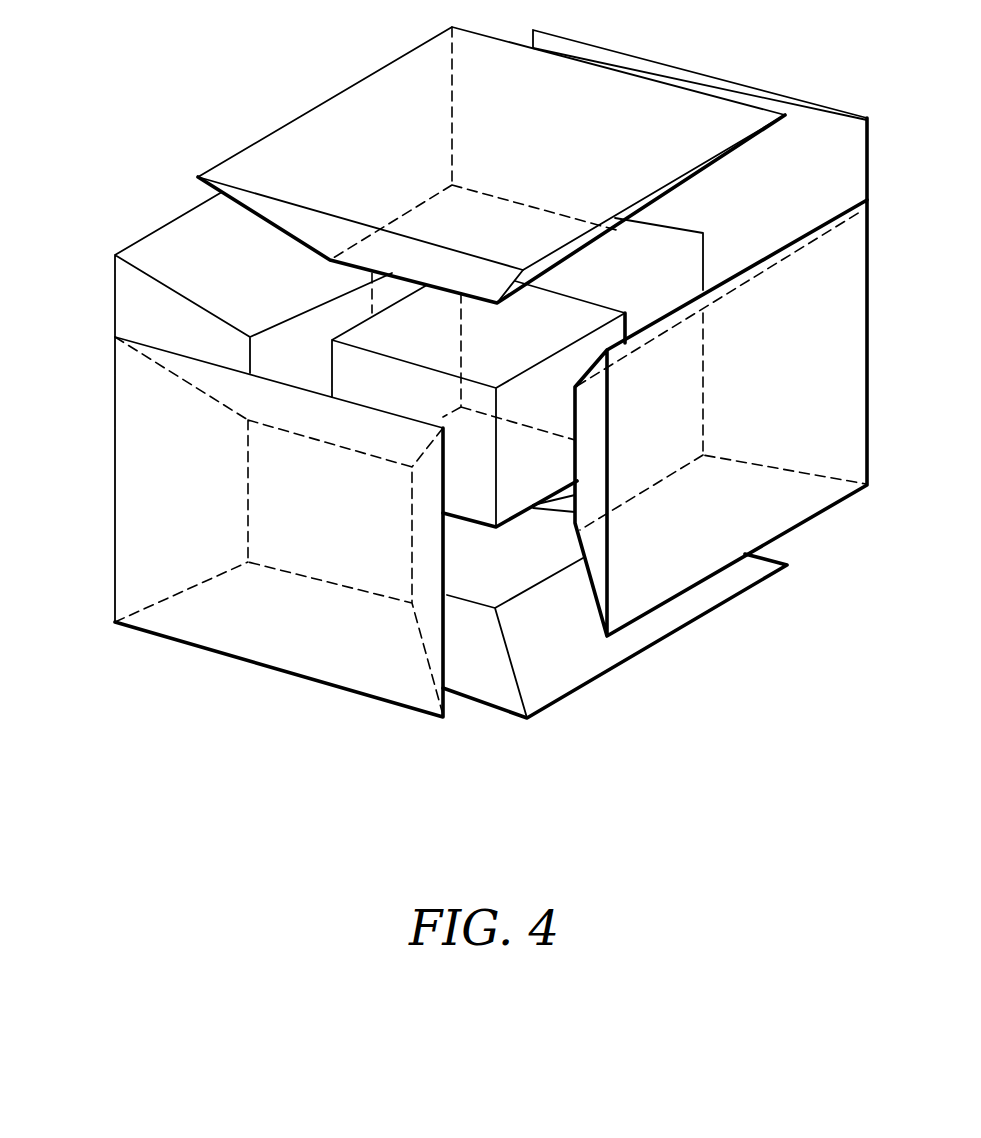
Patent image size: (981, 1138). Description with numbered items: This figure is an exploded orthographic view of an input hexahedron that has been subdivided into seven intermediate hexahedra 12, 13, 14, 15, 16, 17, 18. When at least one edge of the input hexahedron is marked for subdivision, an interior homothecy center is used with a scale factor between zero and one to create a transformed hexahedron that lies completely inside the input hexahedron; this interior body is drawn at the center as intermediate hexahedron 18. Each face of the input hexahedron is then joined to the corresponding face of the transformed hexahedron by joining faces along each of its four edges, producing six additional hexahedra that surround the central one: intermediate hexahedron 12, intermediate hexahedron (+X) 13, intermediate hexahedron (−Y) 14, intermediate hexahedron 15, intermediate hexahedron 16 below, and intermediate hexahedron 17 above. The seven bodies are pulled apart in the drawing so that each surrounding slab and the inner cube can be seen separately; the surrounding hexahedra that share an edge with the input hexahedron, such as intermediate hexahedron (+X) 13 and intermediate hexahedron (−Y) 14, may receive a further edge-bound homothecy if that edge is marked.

The intermediate hexahedron 12 is at (115, 293).
The intermediate hexahedron (+X) 13 is at (820, 342).
The intermediate hexahedron (−Y) 14 is at (323, 648).
The intermediate hexahedron 15 is at (787, 93).
The intermediate hexahedron 16 is at (643, 625).
The intermediate hexahedron 17 is at (347, 123).
The intermediate hexahedron 18 is at (505, 478).